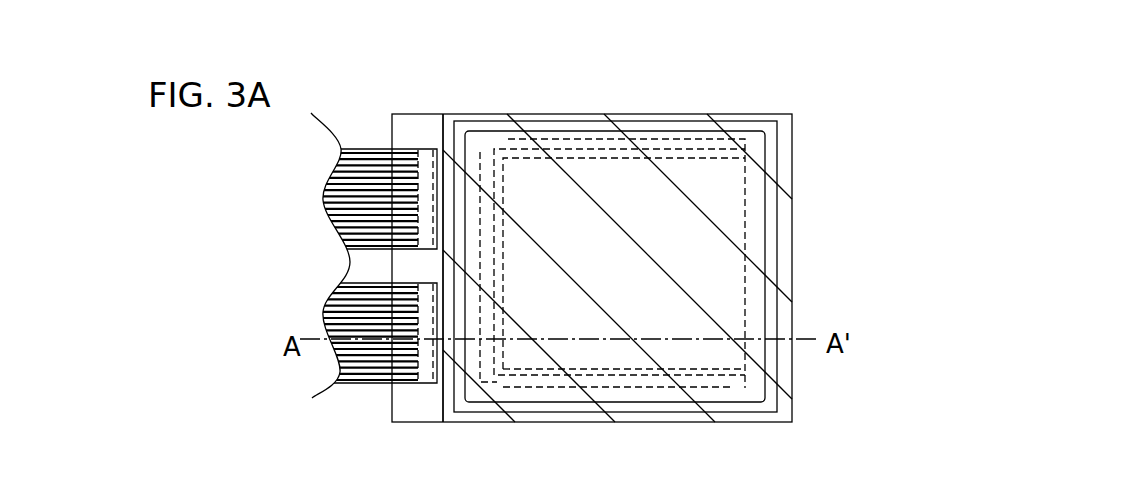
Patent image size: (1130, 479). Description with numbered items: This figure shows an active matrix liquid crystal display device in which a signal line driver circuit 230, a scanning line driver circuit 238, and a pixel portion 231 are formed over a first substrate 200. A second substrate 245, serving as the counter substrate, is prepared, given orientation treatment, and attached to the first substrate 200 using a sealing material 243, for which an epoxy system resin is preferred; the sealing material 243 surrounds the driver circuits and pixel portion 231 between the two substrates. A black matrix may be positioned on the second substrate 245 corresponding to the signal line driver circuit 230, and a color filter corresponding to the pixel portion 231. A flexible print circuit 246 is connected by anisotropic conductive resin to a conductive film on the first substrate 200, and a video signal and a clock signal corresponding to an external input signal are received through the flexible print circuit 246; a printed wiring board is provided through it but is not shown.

The first substrate 200 is at (422, 133).
The second substrate 245 is at (443, 126).
The sealing material 243 is at (773, 162).
The scanning line driver circuit 238 is at (742, 143).
The signal line driver circuit 230 is at (490, 150).
The pixel portion 231 is at (730, 254).
The flexible print circuit (FPC) 246 is at (357, 378).